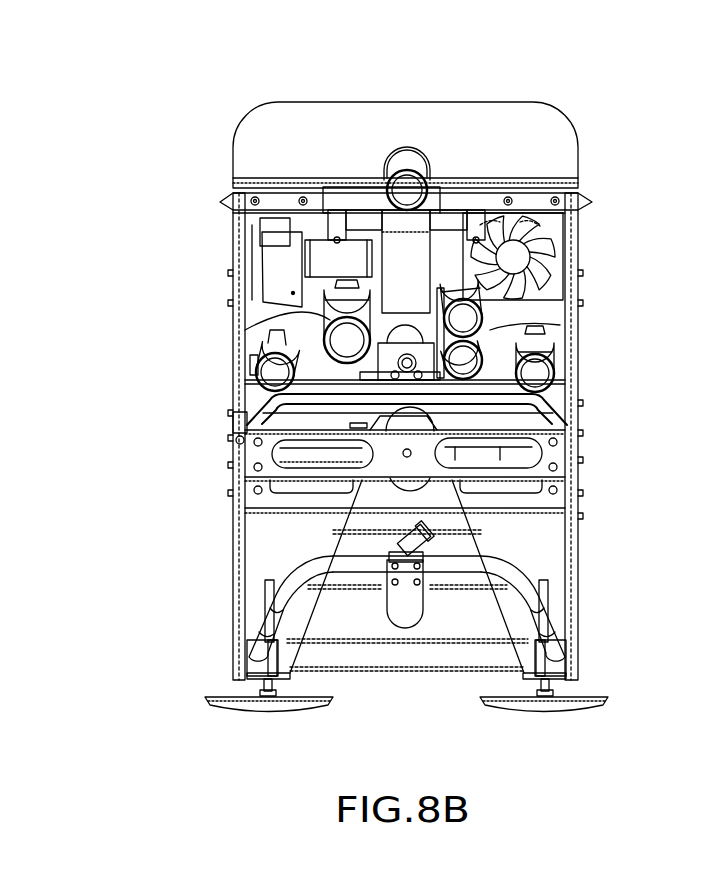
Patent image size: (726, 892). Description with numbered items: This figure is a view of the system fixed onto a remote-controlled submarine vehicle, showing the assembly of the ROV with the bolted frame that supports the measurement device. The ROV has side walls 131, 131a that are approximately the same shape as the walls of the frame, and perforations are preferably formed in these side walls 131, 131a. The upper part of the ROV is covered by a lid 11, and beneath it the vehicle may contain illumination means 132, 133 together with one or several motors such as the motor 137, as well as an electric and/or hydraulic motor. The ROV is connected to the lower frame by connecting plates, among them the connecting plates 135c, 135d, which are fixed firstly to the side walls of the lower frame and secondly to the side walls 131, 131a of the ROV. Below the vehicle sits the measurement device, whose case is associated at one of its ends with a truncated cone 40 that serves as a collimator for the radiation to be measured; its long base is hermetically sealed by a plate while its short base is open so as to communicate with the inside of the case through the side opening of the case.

The lid 11 is at (553, 130).
The illumination means 133 is at (405, 178).
The motor 137 is at (537, 243).
The side wall 131 is at (572, 272).
The side wall 131a is at (243, 262).
The illumination means 132 is at (272, 368).
The connecting plate 135c is at (563, 423).
The connecting plate 135d is at (233, 422).
The truncated cone 40 is at (455, 623).